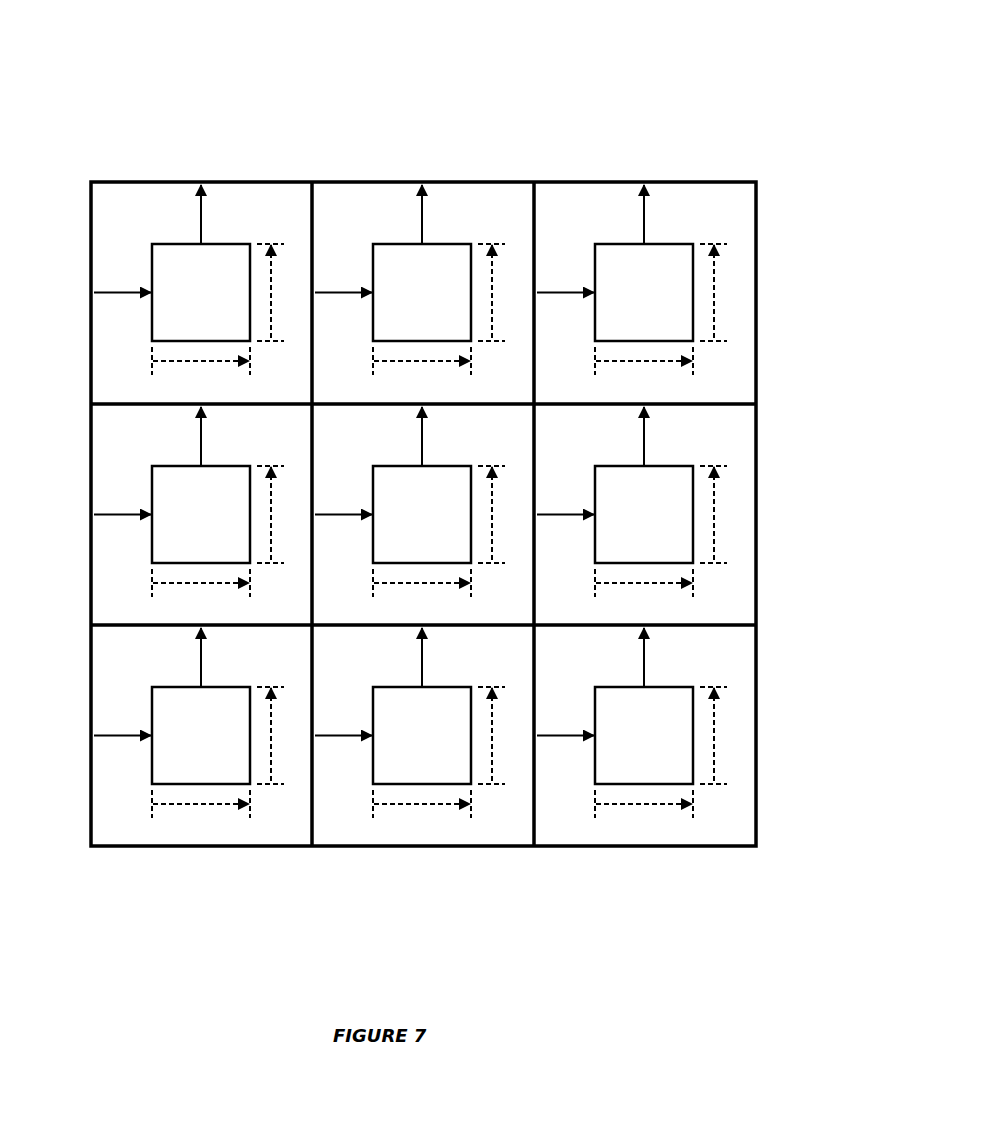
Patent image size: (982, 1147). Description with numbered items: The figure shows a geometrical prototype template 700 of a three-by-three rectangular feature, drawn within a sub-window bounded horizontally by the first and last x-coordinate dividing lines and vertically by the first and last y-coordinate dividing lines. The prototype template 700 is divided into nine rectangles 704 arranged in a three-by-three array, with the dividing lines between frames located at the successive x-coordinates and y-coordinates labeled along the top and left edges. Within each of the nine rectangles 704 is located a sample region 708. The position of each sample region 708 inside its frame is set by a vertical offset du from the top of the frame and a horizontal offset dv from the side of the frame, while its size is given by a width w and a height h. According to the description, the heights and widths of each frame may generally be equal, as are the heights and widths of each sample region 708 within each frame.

The geometrical prototype template 700 is at (441, 128).
The rectangles 704 is at (152, 224).
The sample region 708 is at (230, 260).